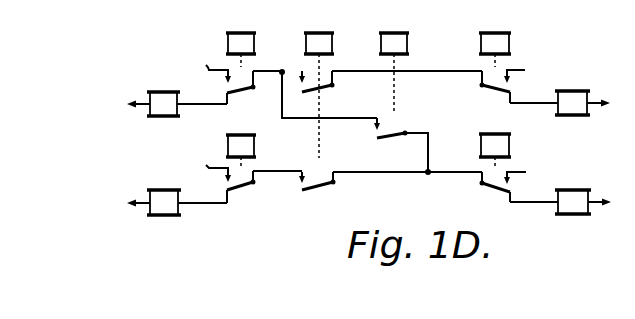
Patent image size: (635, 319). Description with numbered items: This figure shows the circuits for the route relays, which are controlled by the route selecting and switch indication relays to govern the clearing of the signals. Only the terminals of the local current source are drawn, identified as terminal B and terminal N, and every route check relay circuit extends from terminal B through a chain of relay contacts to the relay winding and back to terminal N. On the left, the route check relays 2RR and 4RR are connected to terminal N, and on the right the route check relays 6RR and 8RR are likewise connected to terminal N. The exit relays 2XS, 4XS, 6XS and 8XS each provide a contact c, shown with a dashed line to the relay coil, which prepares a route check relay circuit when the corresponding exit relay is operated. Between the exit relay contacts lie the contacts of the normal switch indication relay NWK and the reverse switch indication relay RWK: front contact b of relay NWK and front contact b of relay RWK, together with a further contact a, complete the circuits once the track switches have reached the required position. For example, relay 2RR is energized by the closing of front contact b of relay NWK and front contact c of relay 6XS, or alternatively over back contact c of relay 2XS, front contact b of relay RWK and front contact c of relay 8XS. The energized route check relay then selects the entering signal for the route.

The exit relay 2XS is at (237, 36).
The exit relay 4XS is at (234, 138).
The exit relay 6XS is at (490, 36).
The exit relay 8XS is at (491, 140).
The normal switch indication relay NWK is at (319, 82).
The reverse switch indication relay RWK is at (401, 59).
The route check relay 2RR is at (159, 92).
The route check relay 4RR is at (158, 190).
The route check relay 6RR is at (577, 91).
The route check relay 8RR is at (575, 191).
The terminal of local source of current B is at (368, 117).
The terminal of local source of current N is at (364, 156).
The contact a is at (317, 174).
The contact b is at (353, 100).
The contact c is at (368, 133).